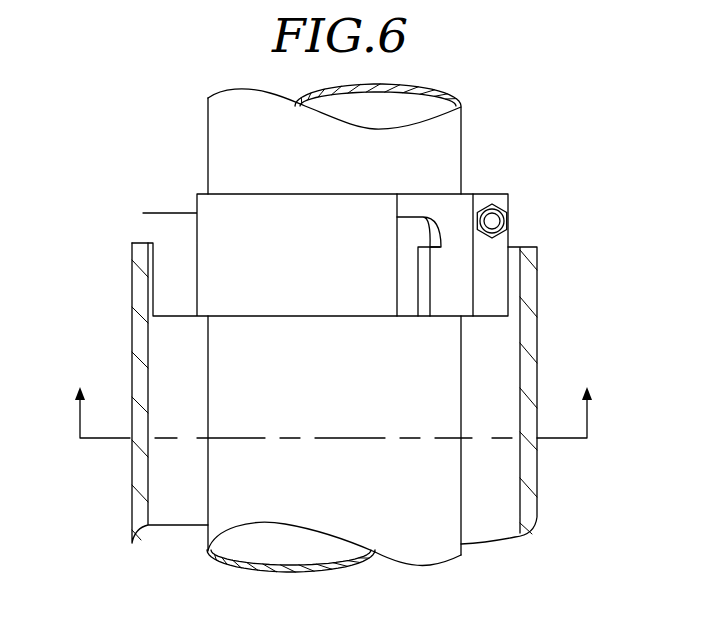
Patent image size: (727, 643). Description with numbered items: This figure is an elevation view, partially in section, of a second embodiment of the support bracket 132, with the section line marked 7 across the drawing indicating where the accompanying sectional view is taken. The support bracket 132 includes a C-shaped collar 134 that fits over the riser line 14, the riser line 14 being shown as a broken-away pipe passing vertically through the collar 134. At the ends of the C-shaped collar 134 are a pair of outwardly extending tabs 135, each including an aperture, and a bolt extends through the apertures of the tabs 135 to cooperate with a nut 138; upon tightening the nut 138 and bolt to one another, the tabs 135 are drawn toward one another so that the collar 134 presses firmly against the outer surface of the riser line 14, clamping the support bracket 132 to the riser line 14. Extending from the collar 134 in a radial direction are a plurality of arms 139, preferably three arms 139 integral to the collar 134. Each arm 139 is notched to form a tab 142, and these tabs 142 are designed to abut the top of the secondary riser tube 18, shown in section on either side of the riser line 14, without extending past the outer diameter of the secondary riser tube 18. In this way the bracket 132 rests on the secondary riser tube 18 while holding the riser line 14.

The riser line 14 is at (430, 523).
The secondary riser tube 18 is at (138, 478).
The support bracket 132 is at (329, 256).
The C-shaped collar 134 is at (285, 290).
The outwardly extending tabs 135 is at (500, 272).
The nut 138 is at (505, 211).
The arms 139 is at (185, 272).
The tab 142 is at (418, 235).
The section line 7- 7 is at (338, 409).